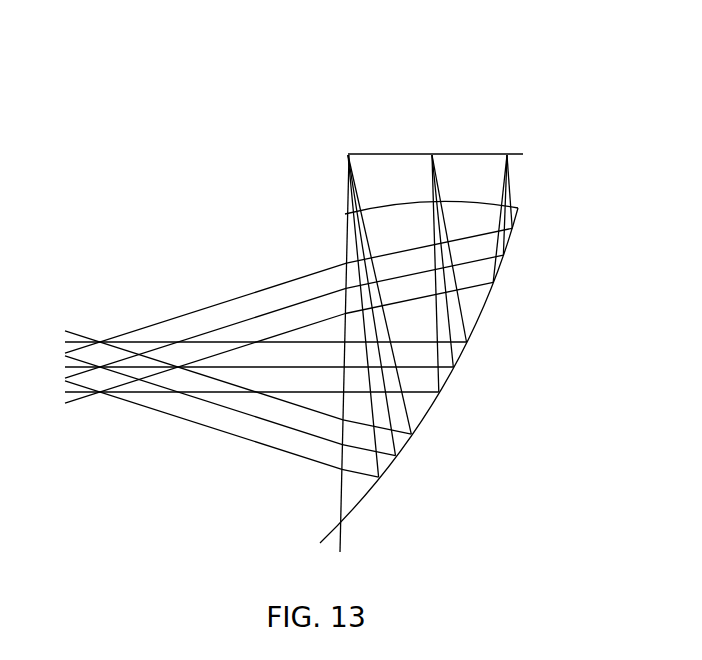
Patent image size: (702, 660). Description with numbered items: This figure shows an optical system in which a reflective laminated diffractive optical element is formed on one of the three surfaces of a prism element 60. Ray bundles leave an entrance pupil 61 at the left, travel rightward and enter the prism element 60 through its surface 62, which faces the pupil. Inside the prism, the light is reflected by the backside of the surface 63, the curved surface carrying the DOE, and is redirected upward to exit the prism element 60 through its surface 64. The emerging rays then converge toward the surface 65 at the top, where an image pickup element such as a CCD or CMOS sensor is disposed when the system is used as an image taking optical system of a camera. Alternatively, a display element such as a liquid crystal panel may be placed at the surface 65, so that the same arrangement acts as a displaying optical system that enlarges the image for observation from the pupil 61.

The prism element 60 is at (380, 353).
The entrance pupil 61 is at (266, 366).
The surface 62 is at (335, 492).
The surface 63 is at (442, 413).
The surface 64 is at (493, 198).
The surface 65 is at (435, 303).